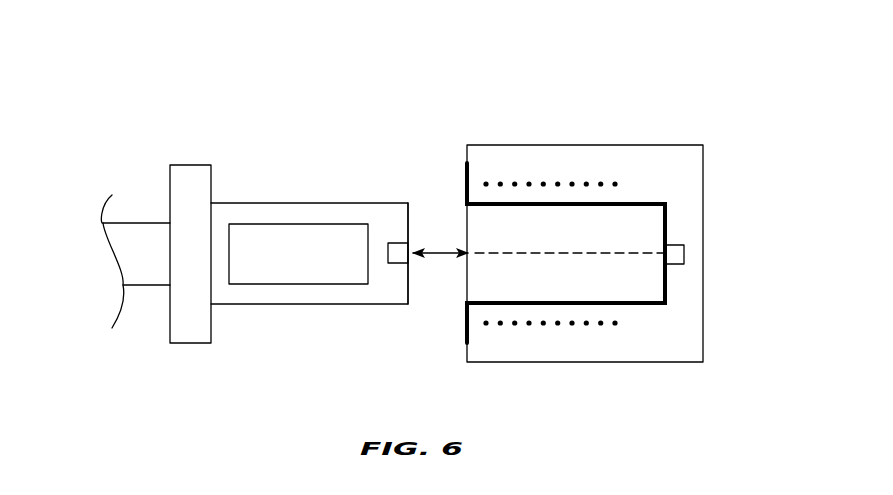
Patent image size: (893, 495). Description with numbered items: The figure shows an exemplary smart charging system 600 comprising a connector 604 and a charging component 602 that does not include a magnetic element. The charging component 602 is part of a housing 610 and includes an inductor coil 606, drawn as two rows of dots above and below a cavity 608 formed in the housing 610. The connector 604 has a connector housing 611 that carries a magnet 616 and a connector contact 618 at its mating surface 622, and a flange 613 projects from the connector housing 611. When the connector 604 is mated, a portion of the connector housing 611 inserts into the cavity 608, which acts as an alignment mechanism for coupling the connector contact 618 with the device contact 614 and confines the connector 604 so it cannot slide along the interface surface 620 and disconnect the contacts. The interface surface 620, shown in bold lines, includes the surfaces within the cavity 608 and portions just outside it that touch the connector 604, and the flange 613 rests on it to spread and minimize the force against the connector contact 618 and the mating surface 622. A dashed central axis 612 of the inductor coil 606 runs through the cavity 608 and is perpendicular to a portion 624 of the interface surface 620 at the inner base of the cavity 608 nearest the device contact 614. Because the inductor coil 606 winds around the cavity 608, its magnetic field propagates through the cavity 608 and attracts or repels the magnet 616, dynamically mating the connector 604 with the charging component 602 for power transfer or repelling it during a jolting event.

The smart charging system 600 is at (282, 87).
The charging component 602 is at (625, 128).
The connector 604 is at (245, 173).
The inductor coil 606 is at (529, 183).
The cavity 608 is at (468, 283).
The housing 610 is at (513, 363).
The connector housing 611 is at (308, 305).
The central axis 612 is at (632, 253).
The flange 613 is at (187, 325).
The device contact 614 is at (673, 264).
The magnet 616 is at (348, 263).
The connector contact 618 is at (400, 243).
The interface surface 620 is at (467, 172).
The mating surface 622 is at (411, 201).
The portion 624 is at (667, 233).